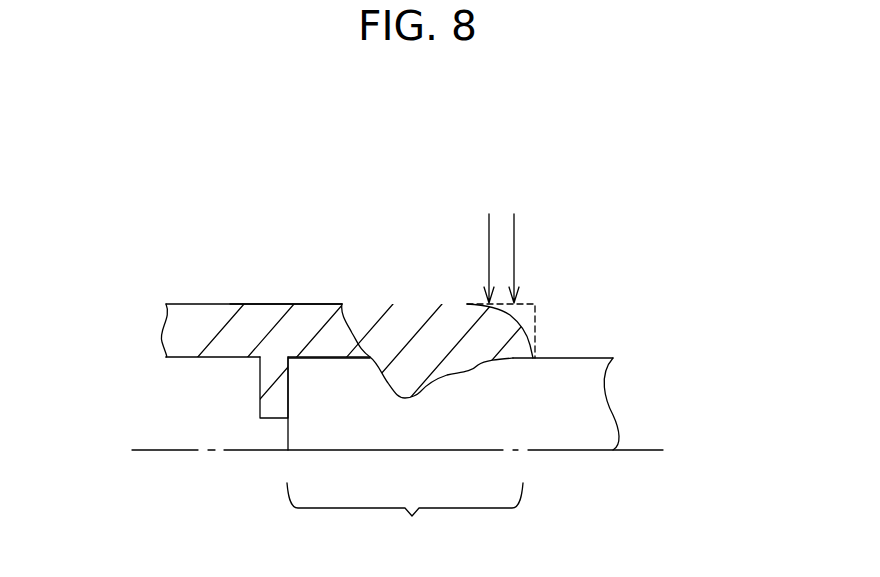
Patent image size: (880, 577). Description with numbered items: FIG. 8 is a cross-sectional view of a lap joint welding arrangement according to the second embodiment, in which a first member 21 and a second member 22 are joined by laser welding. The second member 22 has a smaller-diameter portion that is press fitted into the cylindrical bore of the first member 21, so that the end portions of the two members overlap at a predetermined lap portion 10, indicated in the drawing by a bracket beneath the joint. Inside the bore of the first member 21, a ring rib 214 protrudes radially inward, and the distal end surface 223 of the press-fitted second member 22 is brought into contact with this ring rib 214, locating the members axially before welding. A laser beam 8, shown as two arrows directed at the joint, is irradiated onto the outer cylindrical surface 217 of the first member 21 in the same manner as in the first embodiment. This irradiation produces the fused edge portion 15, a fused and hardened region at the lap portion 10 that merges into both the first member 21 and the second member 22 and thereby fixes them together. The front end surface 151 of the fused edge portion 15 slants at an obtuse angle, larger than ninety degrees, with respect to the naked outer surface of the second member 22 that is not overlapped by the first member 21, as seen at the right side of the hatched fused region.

The laser beam 8 is at (489, 246).
The lap portion 10 is at (405, 526).
The fused edge portion 15 is at (423, 347).
The first member 21 is at (200, 330).
The second member 22 is at (570, 408).
The front end surface 151 is at (528, 333).
The ring rib 214 is at (277, 405).
The outer cylindrical surface 217 is at (271, 303).
The distal end surface 223 is at (287, 430).